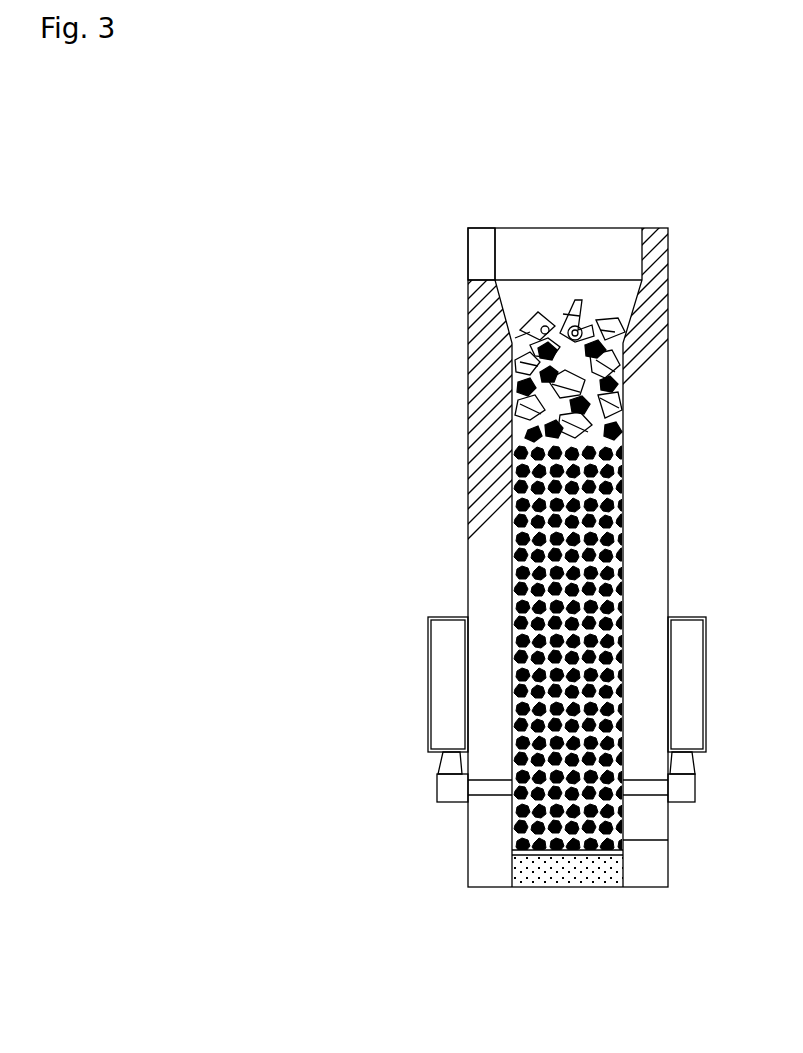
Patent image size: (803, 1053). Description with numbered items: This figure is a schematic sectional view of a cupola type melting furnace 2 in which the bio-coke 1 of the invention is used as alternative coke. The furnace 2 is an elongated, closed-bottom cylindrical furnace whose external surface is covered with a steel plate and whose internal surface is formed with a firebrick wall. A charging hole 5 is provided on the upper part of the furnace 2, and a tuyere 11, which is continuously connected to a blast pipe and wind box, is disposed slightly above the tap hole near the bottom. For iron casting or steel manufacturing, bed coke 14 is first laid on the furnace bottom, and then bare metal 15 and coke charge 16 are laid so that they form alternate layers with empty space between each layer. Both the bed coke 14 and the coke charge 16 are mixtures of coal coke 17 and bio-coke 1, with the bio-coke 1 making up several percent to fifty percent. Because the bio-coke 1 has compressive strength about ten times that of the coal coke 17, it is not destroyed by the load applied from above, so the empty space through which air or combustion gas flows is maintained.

The cupola type melting furnace 2 is at (552, 214).
The charging hole 5 is at (463, 238).
The bare metal 15 is at (508, 309).
The coke charge 16 is at (375, 368).
The bio-coke 1 is at (508, 383).
The coal coke 17 is at (508, 437).
The bed coke 14 is at (348, 623).
The tuyere 11 is at (438, 792).